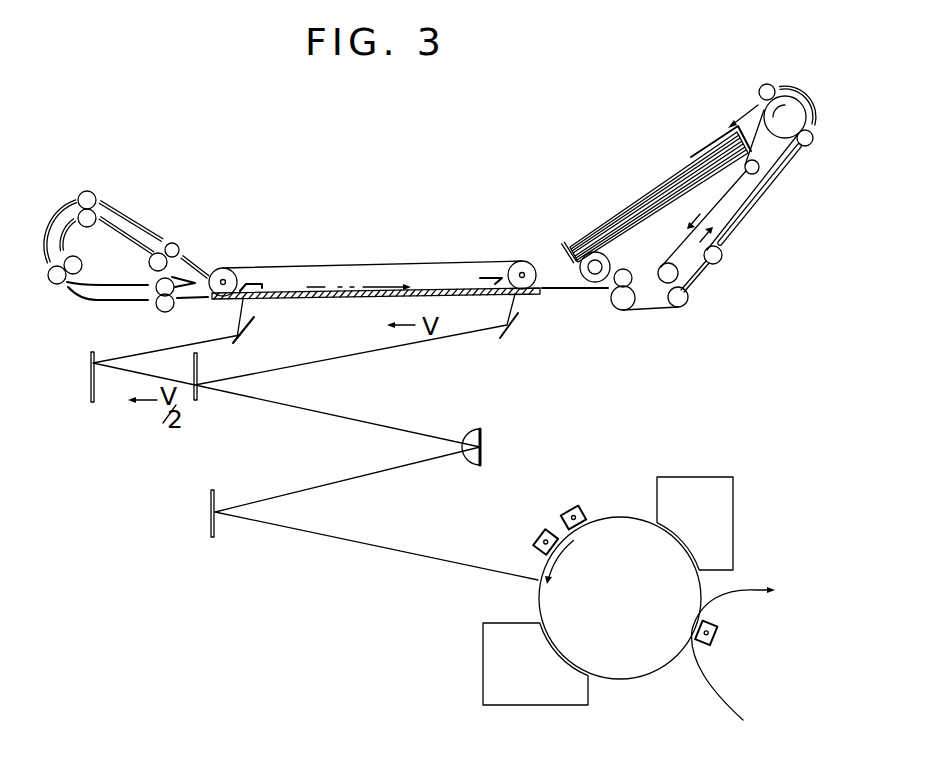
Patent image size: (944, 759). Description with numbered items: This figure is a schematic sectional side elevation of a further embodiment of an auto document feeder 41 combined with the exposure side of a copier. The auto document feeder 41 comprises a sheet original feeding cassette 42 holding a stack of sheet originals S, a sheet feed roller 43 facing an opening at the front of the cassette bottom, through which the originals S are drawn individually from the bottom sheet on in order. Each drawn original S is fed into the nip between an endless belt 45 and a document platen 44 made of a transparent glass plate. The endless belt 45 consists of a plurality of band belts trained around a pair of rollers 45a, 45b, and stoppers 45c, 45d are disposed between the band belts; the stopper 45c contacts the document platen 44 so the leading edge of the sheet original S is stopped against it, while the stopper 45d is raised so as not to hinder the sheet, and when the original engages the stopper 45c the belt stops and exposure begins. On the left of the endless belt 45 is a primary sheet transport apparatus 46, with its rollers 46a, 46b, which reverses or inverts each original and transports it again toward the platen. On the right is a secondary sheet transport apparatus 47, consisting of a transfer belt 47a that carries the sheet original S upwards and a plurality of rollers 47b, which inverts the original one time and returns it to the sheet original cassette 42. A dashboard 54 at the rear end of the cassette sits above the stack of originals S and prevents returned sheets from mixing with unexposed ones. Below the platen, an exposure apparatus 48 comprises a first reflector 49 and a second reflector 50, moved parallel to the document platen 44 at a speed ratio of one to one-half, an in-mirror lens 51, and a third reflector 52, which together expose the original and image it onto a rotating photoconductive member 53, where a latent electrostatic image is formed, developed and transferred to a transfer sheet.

The auto document feeder 41 is at (550, 226).
The sheet original feeding cassette 42 is at (567, 243).
The sheet feed roller 43 is at (609, 266).
The document platen 44 is at (446, 296).
The endless belt 45 is at (423, 265).
The roller 45a is at (528, 260).
The roller 45b is at (222, 269).
The stopper 45c is at (262, 285).
The stopper 45d is at (487, 279).
The primary sheet transport apparatus 46 is at (121, 205).
The return path roller 46a is at (162, 251).
The return path roller 46b is at (179, 246).
The secondary sheet transport apparatus 47 is at (741, 223).
The transfer belt 47a is at (738, 205).
The rollers 47b is at (773, 86).
The exposure apparatus 48 is at (488, 424).
The first reflector 49 is at (514, 323).
The second reflector 50 is at (198, 362).
The in-mirror lens 51 is at (484, 450).
The third reflector 52 is at (210, 523).
The photoconductive member 53 is at (622, 512).
The dashboard 54 is at (716, 140).
The sheet original S is at (661, 192).